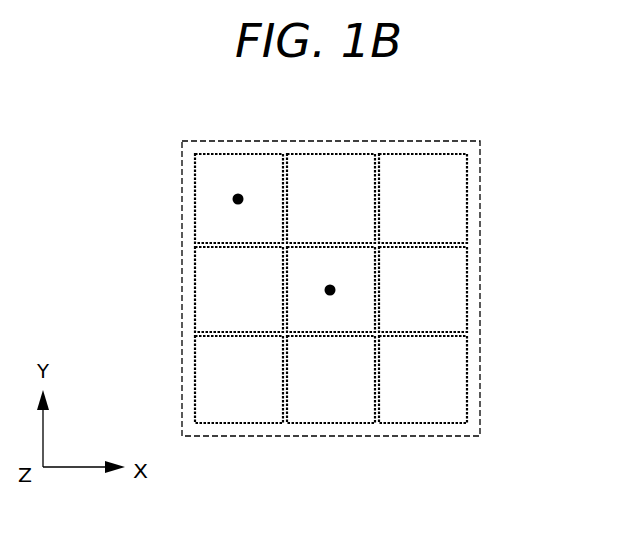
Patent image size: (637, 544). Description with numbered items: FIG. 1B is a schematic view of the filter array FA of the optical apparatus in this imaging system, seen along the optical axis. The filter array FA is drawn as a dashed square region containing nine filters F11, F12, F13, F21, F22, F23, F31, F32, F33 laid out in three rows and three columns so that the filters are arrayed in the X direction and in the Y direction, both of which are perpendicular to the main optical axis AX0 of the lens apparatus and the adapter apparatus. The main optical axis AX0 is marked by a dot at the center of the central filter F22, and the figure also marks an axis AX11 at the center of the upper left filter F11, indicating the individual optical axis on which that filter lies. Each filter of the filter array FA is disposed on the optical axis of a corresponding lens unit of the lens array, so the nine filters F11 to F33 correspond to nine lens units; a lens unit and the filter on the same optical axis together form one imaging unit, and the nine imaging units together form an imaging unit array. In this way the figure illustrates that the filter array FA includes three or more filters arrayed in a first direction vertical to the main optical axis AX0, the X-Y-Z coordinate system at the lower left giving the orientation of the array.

The filter array FA is at (215, 138).
The filter F11 is at (239, 198).
The filter F12 is at (331, 198).
The filter F13 is at (423, 198).
The filter F21 is at (239, 289).
The filter F22 is at (331, 289).
The filter F23 is at (423, 289).
The filter F31 is at (239, 379).
The filter F32 is at (331, 379).
The filter F33 is at (423, 379).
The axis of field F11 AX11 is at (233, 199).
The optical axis AX0 is at (336, 289).